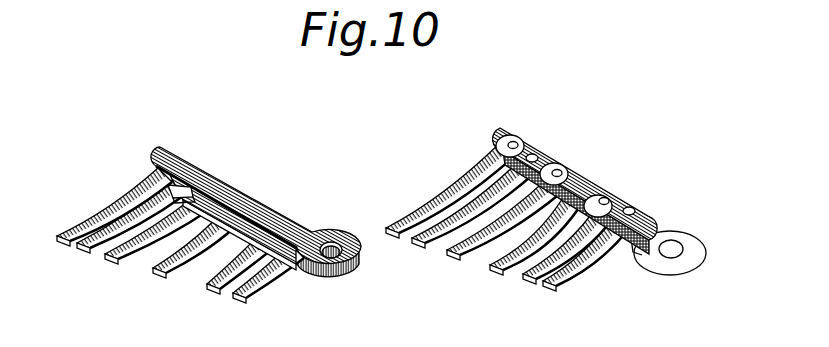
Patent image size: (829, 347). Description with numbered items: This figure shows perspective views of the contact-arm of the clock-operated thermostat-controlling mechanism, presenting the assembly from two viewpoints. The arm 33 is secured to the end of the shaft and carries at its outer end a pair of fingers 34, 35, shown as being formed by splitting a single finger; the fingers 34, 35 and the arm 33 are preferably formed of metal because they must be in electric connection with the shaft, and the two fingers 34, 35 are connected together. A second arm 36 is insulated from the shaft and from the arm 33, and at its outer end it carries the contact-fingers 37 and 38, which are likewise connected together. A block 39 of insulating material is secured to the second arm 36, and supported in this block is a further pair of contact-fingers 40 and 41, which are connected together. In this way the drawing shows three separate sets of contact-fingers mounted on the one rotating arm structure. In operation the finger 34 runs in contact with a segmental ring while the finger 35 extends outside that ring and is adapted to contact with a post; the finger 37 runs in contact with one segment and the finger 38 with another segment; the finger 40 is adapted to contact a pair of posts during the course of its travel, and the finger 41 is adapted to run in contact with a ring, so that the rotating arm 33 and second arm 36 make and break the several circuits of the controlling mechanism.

The arm 33 is at (202, 172).
The finger 34 is at (83, 246).
The finger 35 is at (83, 226).
The second arm 36 is at (235, 230).
The contact-finger 37 is at (132, 253).
The contact-finger 38 is at (168, 273).
The block of insulating material 39 is at (223, 208).
The contact-finger 40 is at (213, 287).
The contact-finger 41 is at (255, 292).